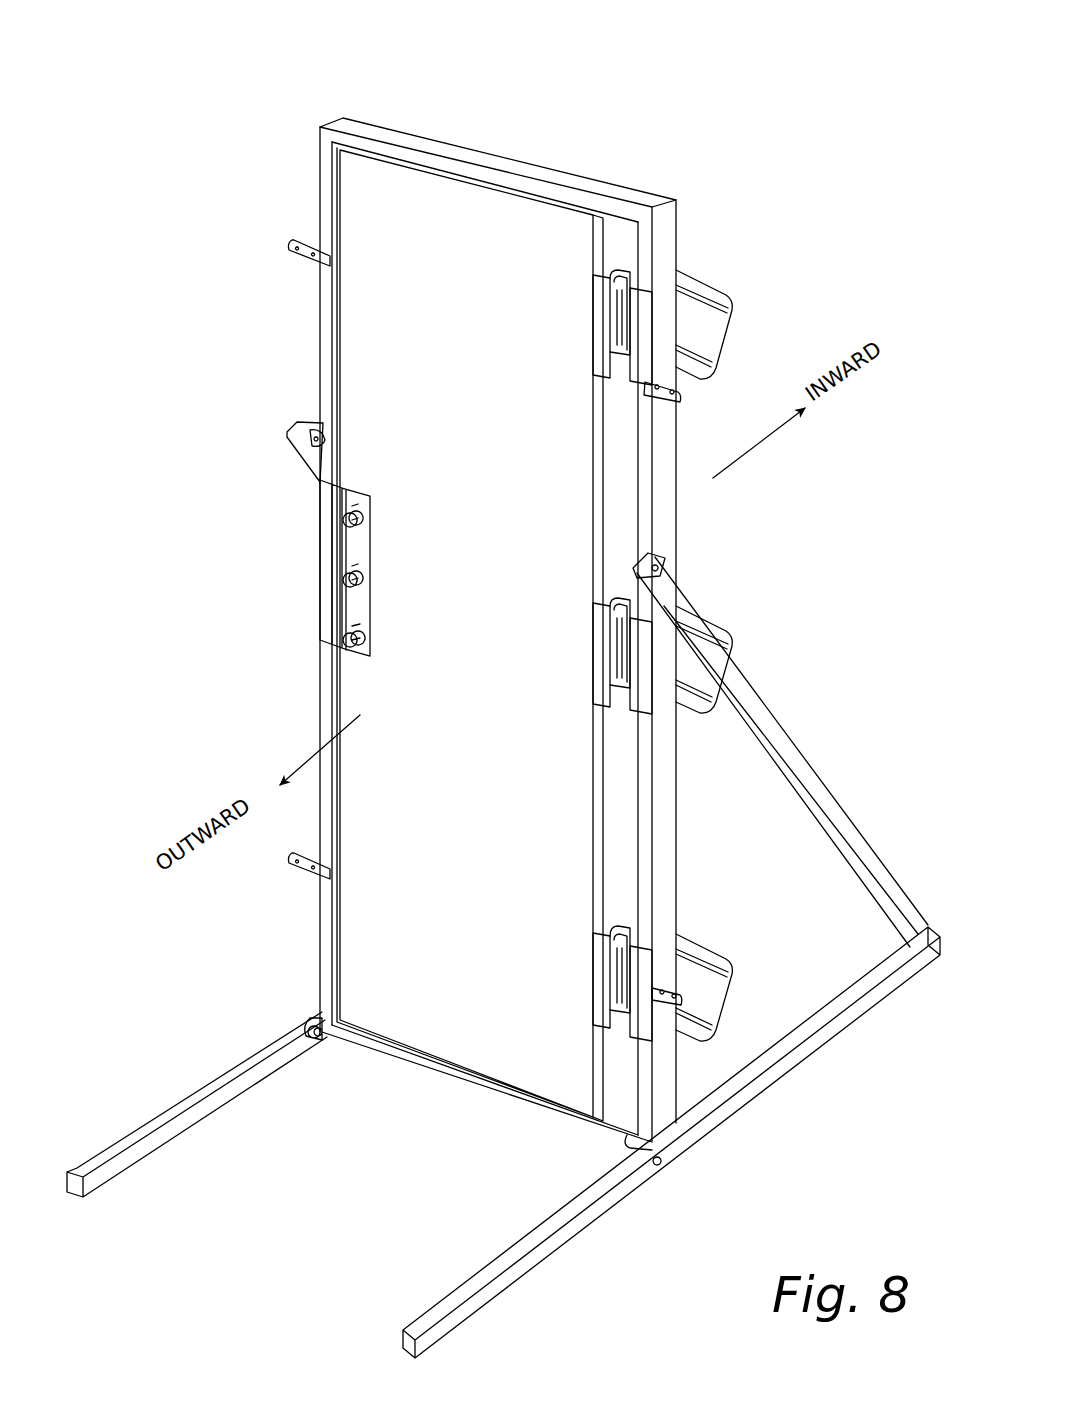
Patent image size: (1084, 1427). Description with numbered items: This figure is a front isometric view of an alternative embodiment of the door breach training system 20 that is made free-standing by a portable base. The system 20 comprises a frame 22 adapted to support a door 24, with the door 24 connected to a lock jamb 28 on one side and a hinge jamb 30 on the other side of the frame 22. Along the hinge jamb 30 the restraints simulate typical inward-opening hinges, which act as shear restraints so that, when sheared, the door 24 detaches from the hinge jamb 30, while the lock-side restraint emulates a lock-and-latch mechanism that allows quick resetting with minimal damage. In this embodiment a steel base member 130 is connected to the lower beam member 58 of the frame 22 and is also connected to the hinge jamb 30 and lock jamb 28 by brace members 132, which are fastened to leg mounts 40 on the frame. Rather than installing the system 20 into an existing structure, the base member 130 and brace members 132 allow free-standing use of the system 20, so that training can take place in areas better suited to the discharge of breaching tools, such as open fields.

The door breach training system 20 is at (280, 90).
The frame 22 is at (430, 142).
The door 24 is at (462, 760).
The lock jamb 28 is at (327, 190).
The hinge jamb 30 is at (665, 238).
The leg mounts 40 is at (330, 438).
The lower beam member 58 is at (478, 1083).
The base member 130 is at (178, 1096).
The brace members 132 is at (300, 420).